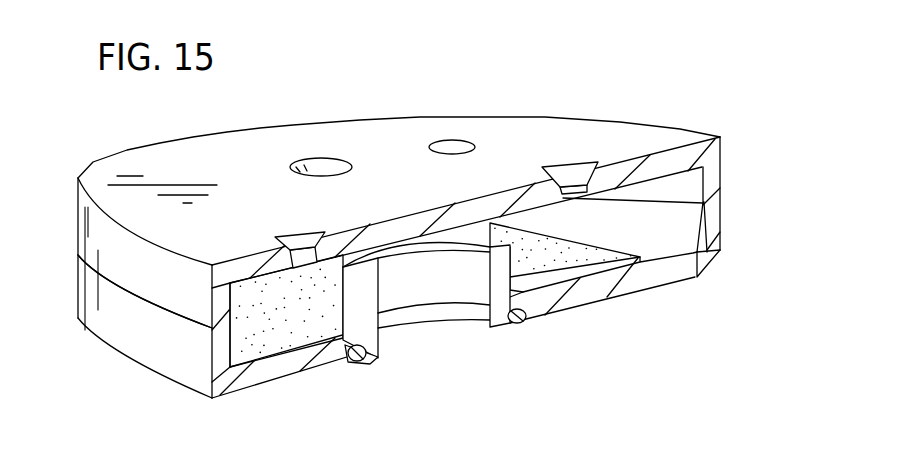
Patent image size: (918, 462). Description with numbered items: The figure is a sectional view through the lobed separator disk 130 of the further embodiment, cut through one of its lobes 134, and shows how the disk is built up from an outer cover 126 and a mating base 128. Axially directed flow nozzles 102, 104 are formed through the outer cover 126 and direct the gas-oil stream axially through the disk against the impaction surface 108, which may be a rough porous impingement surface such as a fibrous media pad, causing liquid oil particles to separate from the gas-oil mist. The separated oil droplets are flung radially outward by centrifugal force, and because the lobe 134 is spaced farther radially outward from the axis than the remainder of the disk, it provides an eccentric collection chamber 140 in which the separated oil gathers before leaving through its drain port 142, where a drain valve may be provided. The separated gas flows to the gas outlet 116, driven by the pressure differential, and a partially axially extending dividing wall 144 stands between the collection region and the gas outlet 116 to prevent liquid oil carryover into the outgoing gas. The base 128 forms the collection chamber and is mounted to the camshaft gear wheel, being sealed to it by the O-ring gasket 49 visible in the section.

The separator disk 130 is at (545, 117).
The lobe 134 is at (712, 133).
The flow nozzle 102 is at (313, 162).
The flow nozzle 104 is at (298, 238).
The outer cover 126 is at (80, 222).
The base 128 is at (117, 337).
The impaction surface 108 is at (298, 328).
The gas outlet 116 is at (405, 287).
The dividing wall 144 is at (500, 262).
The O-ring gasket 49 is at (518, 325).
The eccentric collection chamber 140 is at (667, 257).
The drain port 142 is at (708, 268).